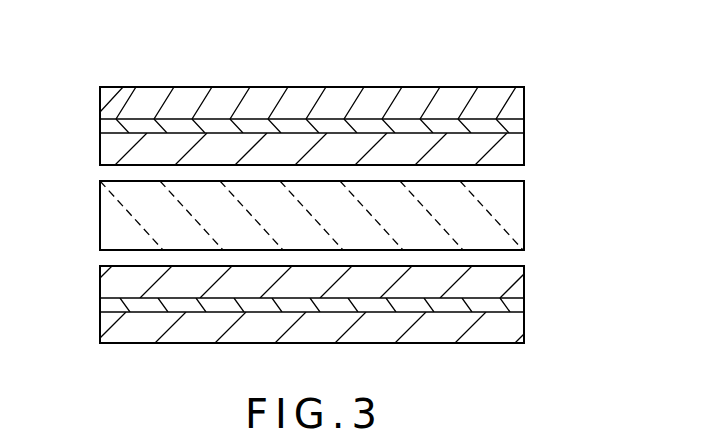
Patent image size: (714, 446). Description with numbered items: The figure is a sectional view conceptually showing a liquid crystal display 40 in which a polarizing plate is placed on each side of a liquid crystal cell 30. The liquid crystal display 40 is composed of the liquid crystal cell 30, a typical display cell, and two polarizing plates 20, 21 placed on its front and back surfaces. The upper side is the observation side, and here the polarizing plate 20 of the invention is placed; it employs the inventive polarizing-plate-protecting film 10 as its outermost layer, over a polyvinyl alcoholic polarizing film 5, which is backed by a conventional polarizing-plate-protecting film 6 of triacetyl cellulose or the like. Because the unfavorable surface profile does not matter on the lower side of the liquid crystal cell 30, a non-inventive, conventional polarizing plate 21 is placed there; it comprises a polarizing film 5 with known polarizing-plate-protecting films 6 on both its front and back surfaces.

The liquid crystal display 40 is at (522, 63).
The polarizing plate 20 is at (373, 127).
The conventional polarizing plate 21 is at (587, 260).
The polarizing-plate-protecting film 10 is at (348, 103).
The polarizing film 5 is at (523, 125).
The polarizing-plate-protecting film 6 is at (518, 148).
The liquid crystal cell 30 is at (510, 213).